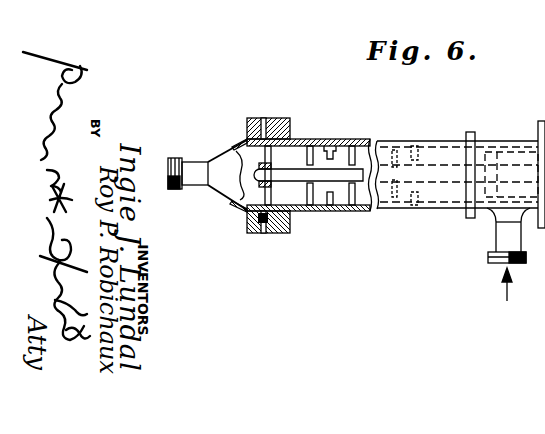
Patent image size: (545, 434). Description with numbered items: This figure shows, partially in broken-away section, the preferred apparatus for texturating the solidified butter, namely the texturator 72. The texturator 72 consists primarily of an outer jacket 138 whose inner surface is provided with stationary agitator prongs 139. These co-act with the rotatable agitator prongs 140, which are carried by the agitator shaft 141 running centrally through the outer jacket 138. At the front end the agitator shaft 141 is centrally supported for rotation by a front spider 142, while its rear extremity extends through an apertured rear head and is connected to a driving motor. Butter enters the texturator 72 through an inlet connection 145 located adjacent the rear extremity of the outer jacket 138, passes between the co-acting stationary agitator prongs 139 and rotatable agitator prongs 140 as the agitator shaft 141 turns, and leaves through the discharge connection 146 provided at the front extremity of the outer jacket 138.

The discharge connection 146 is at (194, 165).
The front spider 142 is at (262, 195).
The texturator 72 is at (384, 209).
The agitator shaft 141 is at (323, 178).
The rotatable agitator prongs 140 is at (310, 146).
The stationary agitator prongs 139 is at (332, 144).
The outer jacket 138 is at (413, 140).
The inlet connection 145 is at (498, 241).